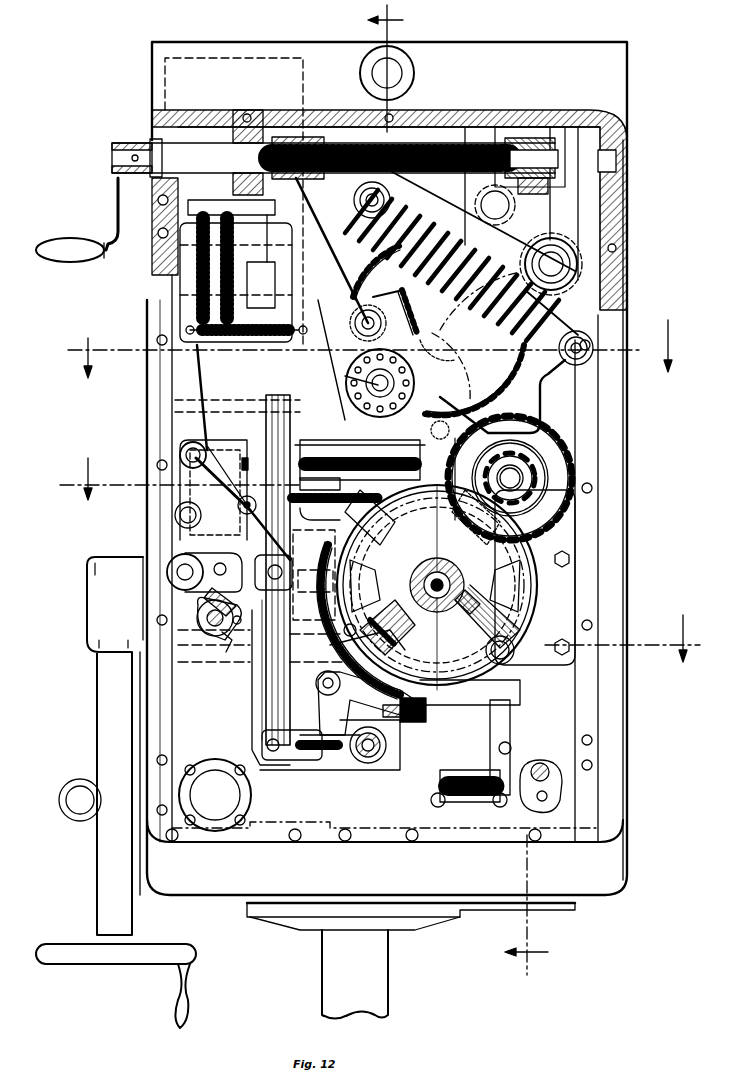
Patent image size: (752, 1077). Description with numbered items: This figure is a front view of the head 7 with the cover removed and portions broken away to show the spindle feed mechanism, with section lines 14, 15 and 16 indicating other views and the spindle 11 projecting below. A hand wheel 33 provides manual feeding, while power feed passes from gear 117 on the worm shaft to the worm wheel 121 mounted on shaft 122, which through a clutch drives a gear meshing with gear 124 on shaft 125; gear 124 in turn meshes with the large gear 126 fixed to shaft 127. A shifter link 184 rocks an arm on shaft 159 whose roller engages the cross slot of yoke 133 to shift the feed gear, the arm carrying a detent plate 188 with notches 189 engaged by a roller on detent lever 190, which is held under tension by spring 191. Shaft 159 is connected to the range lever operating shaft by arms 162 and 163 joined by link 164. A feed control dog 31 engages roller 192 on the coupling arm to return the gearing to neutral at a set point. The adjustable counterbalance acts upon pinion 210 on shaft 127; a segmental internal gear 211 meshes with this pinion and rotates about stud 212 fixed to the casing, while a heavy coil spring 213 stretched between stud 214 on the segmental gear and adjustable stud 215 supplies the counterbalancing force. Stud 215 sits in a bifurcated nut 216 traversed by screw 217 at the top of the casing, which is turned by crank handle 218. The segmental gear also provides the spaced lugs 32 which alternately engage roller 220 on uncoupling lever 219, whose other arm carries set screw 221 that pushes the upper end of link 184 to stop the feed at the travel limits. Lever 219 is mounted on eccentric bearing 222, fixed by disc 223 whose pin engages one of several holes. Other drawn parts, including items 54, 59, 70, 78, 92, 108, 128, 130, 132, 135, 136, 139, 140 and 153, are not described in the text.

The housing 7 is at (627, 232).
The shaft 11 is at (388, 972).
The section line 14- 14 is at (370, 340).
The section line 15- 15 is at (380, 551).
The section line 16- 16 is at (470, 490).
The dog 31 is at (335, 658).
The dogs 32 is at (407, 340).
The hand wheel 33 is at (78, 958).
The block 54 is at (428, 714).
The base plate 59 is at (418, 920).
The rack 70 is at (410, 463).
The rack bar 78 is at (322, 452).
The bottom plate 92 is at (338, 832).
The hub 108 is at (420, 578).
The gear 117 is at (380, 496).
The worm wheel 121 is at (534, 603).
The shaft 122 is at (460, 584).
The gear 124 is at (545, 498).
The shaft 125 is at (515, 472).
The large gear 126 is at (436, 398).
The shaft 127 is at (462, 348).
The clutch member 128 is at (391, 627).
The bushing 130 is at (385, 747).
The pin 132 is at (398, 643).
The yoke 133 is at (330, 726).
The slide block 135 is at (335, 558).
The slide block 136 is at (336, 582).
The bracket 139 is at (505, 680).
The mounting plate 140 is at (550, 650).
The pivot 153 is at (215, 636).
The shaft 159 is at (180, 570).
The arm 162 is at (226, 650).
The arm 163 is at (212, 566).
The link 164 is at (210, 600).
The shifter link 184 is at (275, 705).
The detent plate 188 is at (205, 545).
The notches 189 is at (292, 520).
The detent lever 190 is at (262, 453).
The spring 191 is at (240, 335).
The roller 192 is at (335, 690).
The pinion 210 is at (445, 326).
The segmental internal gear 211 is at (472, 398).
The stud 212 is at (551, 258).
The coil spring 213 is at (375, 256).
The stud 214 is at (590, 352).
The adjustable stud 215 is at (380, 188).
The bifurcated nut 216 is at (340, 138).
The screw 217 is at (458, 147).
The crank handle 218 is at (58, 246).
The uncoupling lever 219 is at (364, 386).
The roller 220 is at (372, 333).
The set screw 221 is at (375, 380).
The eccentric bearing 222 is at (458, 366).
The disc 223 is at (358, 346).